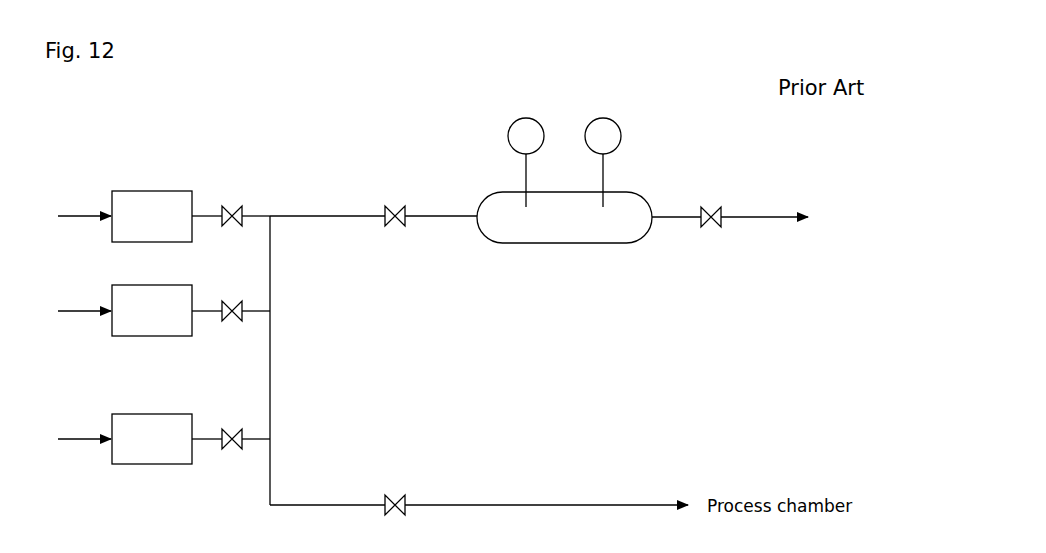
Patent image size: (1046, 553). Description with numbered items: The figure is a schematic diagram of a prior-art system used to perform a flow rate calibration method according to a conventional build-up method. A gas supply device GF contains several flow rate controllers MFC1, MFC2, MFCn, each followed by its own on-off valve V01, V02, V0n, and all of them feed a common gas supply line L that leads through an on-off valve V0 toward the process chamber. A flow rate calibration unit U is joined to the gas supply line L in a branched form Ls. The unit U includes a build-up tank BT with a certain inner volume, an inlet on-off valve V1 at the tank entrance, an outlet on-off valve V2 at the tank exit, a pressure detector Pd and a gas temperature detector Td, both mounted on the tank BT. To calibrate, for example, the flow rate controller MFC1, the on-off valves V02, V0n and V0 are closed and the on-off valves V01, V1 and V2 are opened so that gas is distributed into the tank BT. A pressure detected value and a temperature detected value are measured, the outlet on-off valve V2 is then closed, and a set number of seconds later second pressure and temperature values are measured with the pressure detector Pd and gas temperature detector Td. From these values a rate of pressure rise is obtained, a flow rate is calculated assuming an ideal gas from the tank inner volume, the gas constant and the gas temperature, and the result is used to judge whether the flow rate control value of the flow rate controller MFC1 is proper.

The gas supply device GF is at (138, 166).
The flow rate controller MFC1 is at (140, 216).
The flow rate controller MFC2 is at (140, 310).
The flow rate controller MFCn is at (140, 439).
The on-off valve V01 is at (232, 206).
The on-off valve V02 is at (232, 301).
The on-off valve V0n is at (232, 429).
The gas supply line L is at (270, 472).
The branched form Ls is at (315, 215).
The on-off valve V0 is at (395, 495).
The inlet on-off valve V1 is at (395, 206).
The outlet on-off valve V2 is at (709, 207).
The build-up tank BT is at (607, 244).
The flow rate calibration unit U is at (560, 254).
The gas temperature detector Td is at (526, 162).
The pressure detector Pd is at (603, 162).